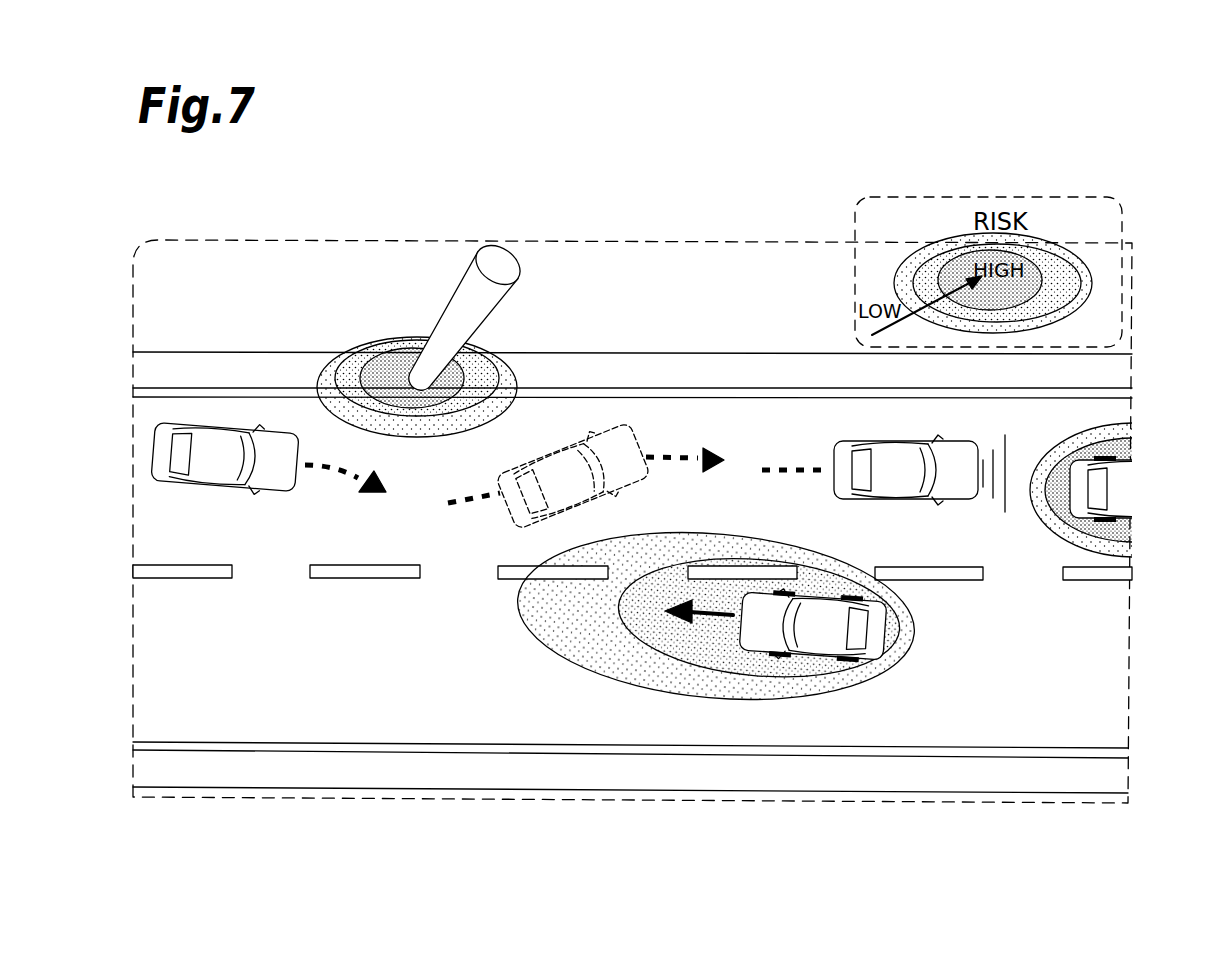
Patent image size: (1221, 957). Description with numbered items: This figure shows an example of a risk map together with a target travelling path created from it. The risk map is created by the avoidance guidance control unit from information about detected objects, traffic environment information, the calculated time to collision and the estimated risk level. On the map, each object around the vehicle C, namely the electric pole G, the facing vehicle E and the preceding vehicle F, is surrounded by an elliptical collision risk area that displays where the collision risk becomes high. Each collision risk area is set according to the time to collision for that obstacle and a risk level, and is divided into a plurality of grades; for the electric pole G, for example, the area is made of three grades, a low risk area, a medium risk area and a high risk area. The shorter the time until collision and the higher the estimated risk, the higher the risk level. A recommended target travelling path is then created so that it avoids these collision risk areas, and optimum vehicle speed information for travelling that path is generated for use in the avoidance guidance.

The electric pole G is at (503, 262).
The host vehicle C is at (230, 485).
The facing vehicle E is at (878, 652).
The preceding vehicle F is at (1117, 488).